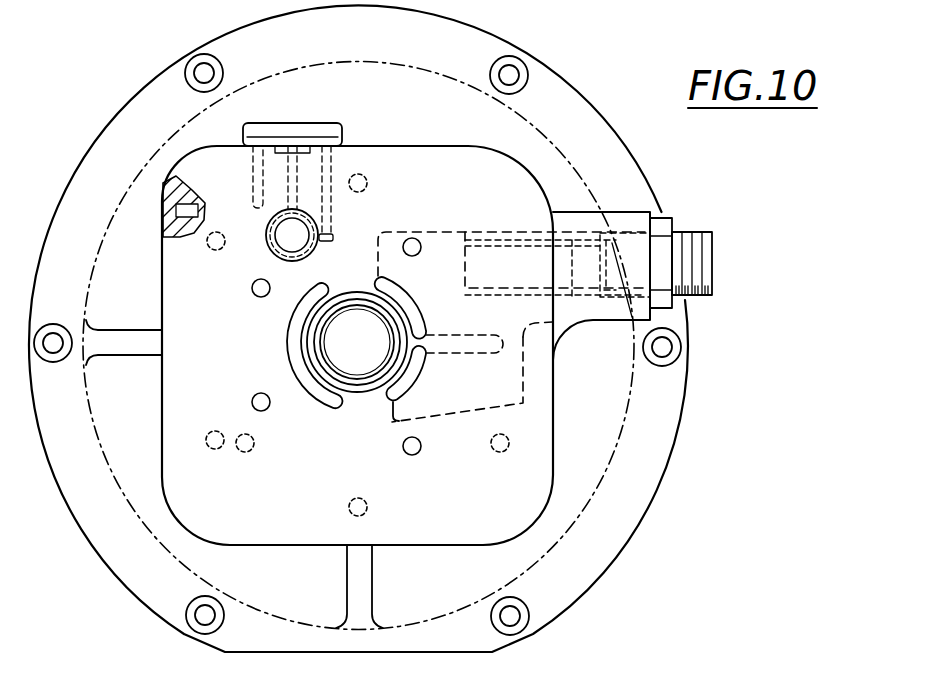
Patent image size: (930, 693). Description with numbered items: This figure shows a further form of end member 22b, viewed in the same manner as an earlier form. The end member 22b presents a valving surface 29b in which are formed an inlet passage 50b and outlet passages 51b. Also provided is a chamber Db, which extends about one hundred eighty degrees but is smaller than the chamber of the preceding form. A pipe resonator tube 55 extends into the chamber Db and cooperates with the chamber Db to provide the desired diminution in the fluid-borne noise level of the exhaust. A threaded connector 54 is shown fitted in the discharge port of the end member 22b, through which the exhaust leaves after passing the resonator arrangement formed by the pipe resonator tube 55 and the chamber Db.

The end member 22b is at (544, 80).
The valving surface 29b is at (392, 538).
The inlet passage 50b is at (315, 402).
The outlet passages 51b is at (416, 314).
The chamber Db is at (527, 406).
The pipe resonator tube 55 is at (580, 236).
The threaded connector 54 is at (712, 277).